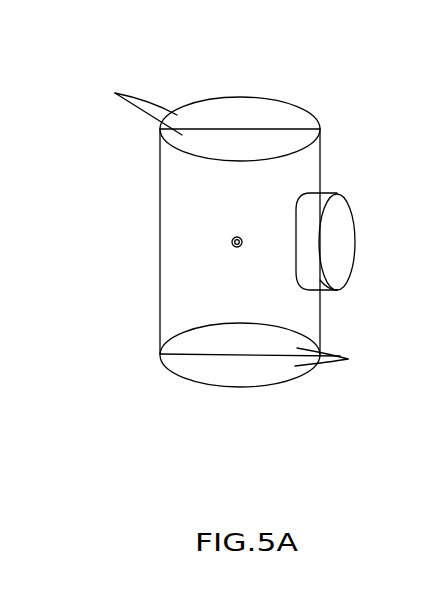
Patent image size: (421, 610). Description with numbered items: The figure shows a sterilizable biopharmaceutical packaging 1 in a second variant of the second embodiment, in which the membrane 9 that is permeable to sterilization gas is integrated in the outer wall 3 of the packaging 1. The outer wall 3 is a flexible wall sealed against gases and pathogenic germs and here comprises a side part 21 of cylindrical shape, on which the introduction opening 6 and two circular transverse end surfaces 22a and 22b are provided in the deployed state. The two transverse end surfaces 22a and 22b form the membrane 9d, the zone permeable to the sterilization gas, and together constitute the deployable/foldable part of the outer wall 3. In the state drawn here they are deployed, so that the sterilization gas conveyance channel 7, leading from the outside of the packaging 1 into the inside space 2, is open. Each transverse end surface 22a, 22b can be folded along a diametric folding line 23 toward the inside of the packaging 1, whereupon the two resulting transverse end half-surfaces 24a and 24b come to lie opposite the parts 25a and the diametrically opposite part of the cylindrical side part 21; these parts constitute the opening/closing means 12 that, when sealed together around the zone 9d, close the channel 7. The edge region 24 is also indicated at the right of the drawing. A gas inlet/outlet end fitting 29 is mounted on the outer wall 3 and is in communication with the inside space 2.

The sterilizable biopharmaceutical packaging 1 is at (325, 163).
The inside space 2 is at (285, 213).
The outer wall 3 is at (180, 292).
The introduction opening 6 is at (340, 268).
The sterilization gas conveyance channel 7 is at (267, 117).
The membrane 9 is at (118, 103).
The membrane 9d is at (338, 357).
The opening/closing means 12 is at (322, 91).
The side part 21 is at (283, 250).
The transverse end surface 22a is at (223, 107).
The transverse end surface 22b is at (203, 368).
The diametric folding line 23 is at (238, 118).
The edge region 24 is at (413, 351).
The transverse end half-surface 24a is at (192, 112).
The transverse end half-surface 24b is at (202, 142).
The part of the cylindrical side part 25a is at (228, 173).
The gas inlet/outlet end fitting 29 is at (231, 242).